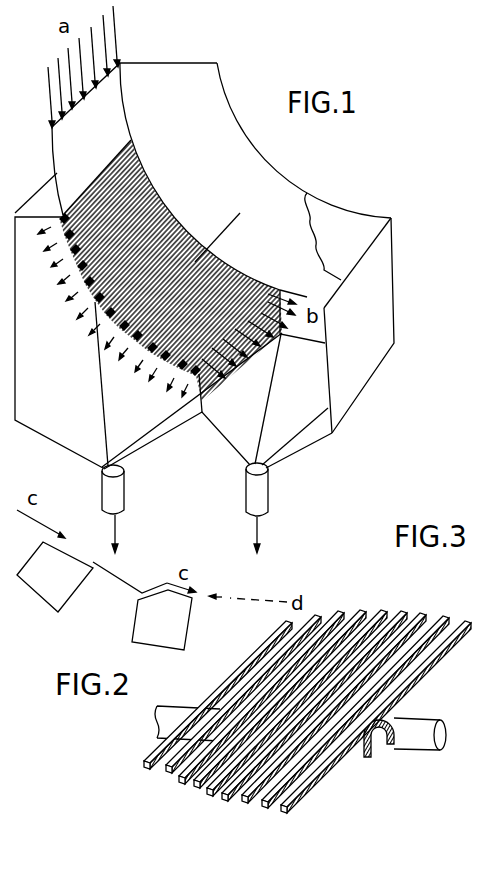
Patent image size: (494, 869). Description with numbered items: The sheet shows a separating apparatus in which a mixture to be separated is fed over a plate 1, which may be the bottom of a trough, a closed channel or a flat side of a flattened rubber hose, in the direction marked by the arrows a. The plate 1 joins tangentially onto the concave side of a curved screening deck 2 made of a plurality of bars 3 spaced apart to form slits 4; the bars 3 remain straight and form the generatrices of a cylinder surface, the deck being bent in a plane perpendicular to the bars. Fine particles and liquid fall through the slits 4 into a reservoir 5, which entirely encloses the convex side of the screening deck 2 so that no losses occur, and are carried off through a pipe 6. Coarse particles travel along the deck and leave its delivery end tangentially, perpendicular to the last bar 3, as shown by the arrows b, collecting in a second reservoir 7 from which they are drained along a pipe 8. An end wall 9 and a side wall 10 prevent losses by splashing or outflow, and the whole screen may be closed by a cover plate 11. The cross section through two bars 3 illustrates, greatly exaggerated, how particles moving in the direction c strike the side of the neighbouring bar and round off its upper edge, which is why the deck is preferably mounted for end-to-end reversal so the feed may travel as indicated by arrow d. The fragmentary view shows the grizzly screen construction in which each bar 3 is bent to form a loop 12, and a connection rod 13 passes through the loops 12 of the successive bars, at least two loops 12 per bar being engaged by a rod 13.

In FIG. 1, the plate 1 is at (91, 167).
In FIG. 1, the screening deck 2 is at (150, 188).
In FIG. 1, the bars 3 is at (172, 228).
In FIG. 2, the bars 3 is at (104, 596).
In FIG. 3, the bars 3 is at (468, 618).
In FIG. 1, the slits 4 is at (196, 262).
In FIG. 1, the reservoir 5 is at (148, 321).
In FIG. 1, the pipe 6 is at (104, 494).
In FIG. 1, the reservoir 7 is at (293, 379).
In FIG. 1, the pipe 8 is at (262, 494).
In FIG. 1, the end wall 9 is at (359, 325).
In FIG. 1, the side wall 10 is at (304, 140).
In FIG. 1, the cover plate 11 is at (348, 250).
In FIG. 3, the loop 12 is at (381, 758).
In FIG. 3, the connection rod 13 is at (441, 735).